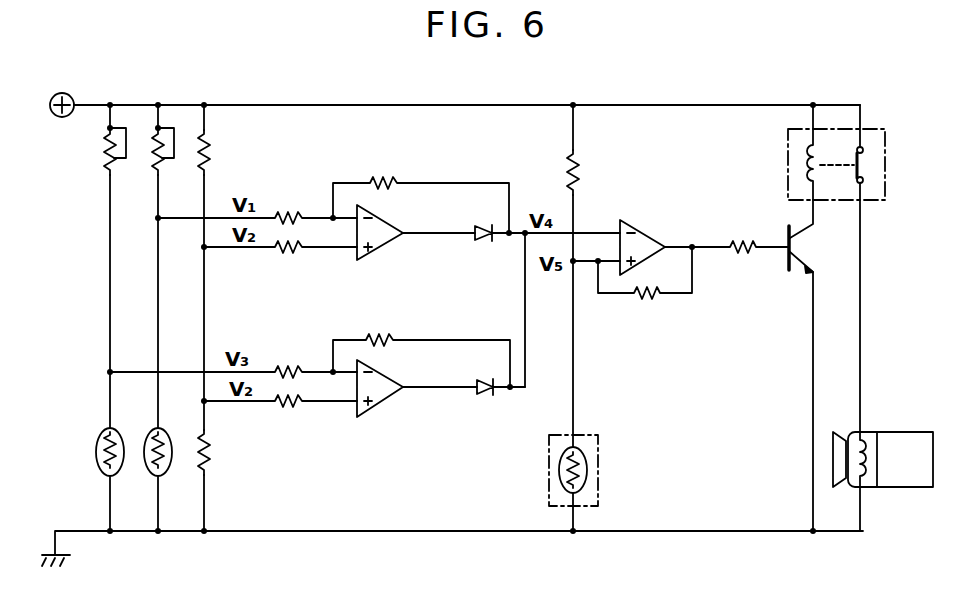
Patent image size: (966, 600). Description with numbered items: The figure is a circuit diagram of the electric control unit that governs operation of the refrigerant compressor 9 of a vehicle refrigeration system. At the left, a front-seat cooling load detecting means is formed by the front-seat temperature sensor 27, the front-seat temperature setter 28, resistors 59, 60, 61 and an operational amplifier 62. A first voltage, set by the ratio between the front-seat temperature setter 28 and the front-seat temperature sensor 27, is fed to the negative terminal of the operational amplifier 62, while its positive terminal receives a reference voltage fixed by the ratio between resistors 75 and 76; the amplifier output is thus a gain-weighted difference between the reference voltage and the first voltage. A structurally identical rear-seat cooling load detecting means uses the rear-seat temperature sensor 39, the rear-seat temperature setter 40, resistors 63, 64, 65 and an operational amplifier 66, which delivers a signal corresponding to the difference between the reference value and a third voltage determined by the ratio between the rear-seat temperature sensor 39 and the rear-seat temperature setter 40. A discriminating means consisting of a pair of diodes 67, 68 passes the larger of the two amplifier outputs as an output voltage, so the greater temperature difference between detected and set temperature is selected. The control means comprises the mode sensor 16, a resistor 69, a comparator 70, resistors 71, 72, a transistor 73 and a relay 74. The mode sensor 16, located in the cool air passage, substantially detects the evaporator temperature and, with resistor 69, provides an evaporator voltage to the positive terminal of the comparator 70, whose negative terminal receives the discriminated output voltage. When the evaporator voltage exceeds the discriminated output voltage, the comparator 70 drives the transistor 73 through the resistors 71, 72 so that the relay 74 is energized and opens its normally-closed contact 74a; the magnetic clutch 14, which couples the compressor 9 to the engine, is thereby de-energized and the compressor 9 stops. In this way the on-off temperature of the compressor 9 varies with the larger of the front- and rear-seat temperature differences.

The refrigerant compressor 9 is at (905, 483).
The magnetic clutch 14 is at (874, 433).
The mode sensor 16 is at (598, 492).
The front-seat temperature sensor 27 is at (172, 466).
The front-seat temperature setter 28 is at (152, 158).
The rear-seat temperature sensor 39 is at (96, 460).
The rear-seat temperature setter 40 is at (104, 156).
The resistor 59 is at (291, 213).
The resistor 60 is at (292, 254).
The resistor 61 is at (384, 183).
The operational amplifier 62 is at (388, 251).
The resistor 63 is at (291, 367).
The resistor 64 is at (297, 407).
The resistor 65 is at (380, 340).
The operational amplifier 66 is at (386, 406).
The diode 67 is at (481, 226).
The diode 68 is at (478, 386).
The resistor 69 is at (580, 174).
The comparator 70 is at (646, 236).
The resistor 71 is at (650, 303).
The resistor 72 is at (740, 247).
The transistor 73 is at (788, 262).
The relay 74 is at (873, 154).
The normally-closed contact 74a is at (864, 170).
The resistor 75 is at (210, 158).
The resistor 76 is at (210, 455).